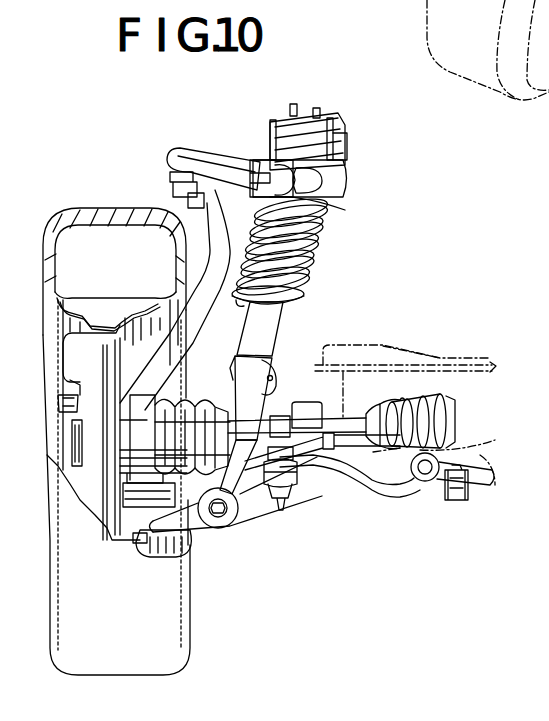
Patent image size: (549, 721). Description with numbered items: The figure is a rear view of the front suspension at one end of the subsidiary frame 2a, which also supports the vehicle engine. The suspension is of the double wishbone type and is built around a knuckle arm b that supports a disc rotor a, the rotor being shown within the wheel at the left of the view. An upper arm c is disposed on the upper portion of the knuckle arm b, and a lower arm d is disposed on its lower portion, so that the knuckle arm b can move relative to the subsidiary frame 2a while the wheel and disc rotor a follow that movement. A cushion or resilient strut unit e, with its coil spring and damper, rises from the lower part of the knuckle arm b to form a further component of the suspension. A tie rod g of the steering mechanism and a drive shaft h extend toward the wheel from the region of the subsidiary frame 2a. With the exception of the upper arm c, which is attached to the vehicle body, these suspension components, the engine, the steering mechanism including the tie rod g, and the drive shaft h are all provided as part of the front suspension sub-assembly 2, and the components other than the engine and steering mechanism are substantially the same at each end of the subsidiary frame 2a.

The disc rotor a is at (92, 428).
The knuckle arm b is at (190, 328).
The upper arm c is at (234, 172).
The lower arm d is at (301, 502).
The resilient strut unit e is at (266, 338).
The tie rod g is at (340, 421).
The drive shaft h is at (356, 437).
The front suspension sub-assembly 2 is at (402, 272).
The subsidiary frame 2a is at (431, 352).